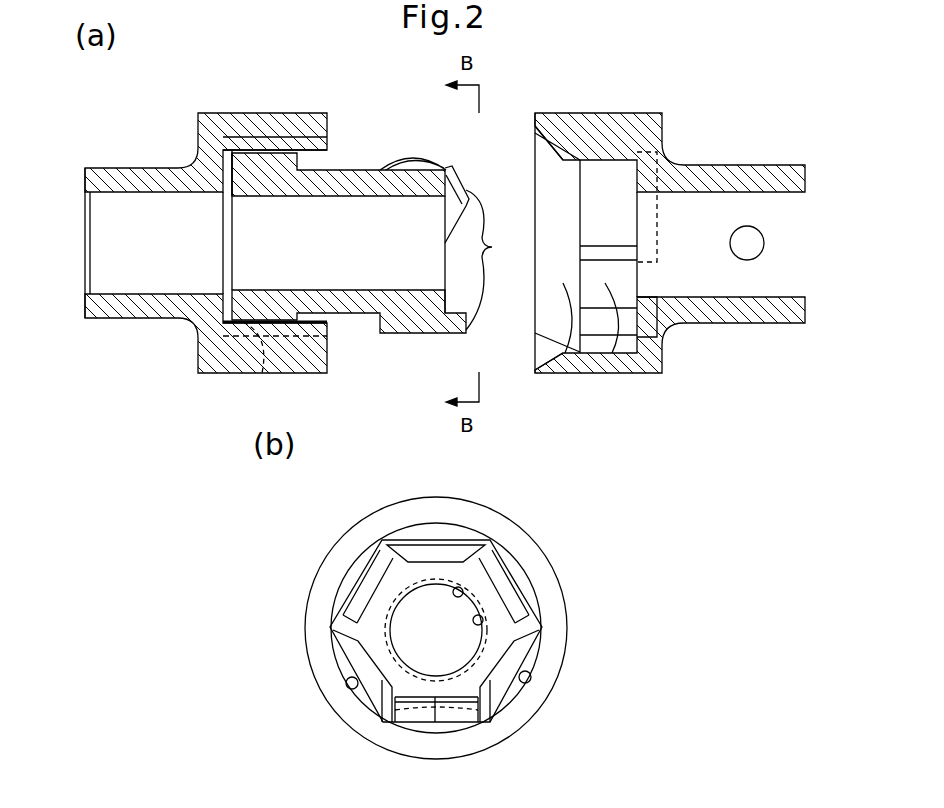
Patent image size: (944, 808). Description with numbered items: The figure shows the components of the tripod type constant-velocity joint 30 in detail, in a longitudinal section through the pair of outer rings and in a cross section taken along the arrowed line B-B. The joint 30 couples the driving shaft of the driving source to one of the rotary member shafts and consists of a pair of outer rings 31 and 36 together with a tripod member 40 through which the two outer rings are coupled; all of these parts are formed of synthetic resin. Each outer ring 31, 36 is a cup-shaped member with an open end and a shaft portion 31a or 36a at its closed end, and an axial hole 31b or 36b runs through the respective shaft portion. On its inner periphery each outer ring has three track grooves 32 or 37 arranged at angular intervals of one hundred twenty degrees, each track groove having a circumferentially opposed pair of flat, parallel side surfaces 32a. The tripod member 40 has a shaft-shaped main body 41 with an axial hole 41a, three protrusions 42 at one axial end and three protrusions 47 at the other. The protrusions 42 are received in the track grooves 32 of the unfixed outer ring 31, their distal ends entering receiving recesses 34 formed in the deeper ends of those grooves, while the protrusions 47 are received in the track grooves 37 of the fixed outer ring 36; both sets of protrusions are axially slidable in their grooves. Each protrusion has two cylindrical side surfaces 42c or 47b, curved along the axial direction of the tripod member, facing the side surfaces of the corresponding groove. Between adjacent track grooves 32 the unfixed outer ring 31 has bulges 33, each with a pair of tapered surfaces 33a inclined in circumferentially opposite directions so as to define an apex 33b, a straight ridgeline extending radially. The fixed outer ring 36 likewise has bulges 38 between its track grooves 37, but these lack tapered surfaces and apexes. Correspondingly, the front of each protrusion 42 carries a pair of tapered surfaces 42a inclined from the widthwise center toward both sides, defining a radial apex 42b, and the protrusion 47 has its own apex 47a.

The tripod type constant-velocity joint 30 is at (644, 106).
The outer ring 31 is at (653, 132).
The shaft portion 31a is at (730, 317).
The axial hole 31b is at (790, 195).
The track groove 32 is at (600, 188).
The side surface 32a is at (617, 240).
The bulge 33 is at (608, 285).
The tapered surface 33a is at (563, 353).
The apex 33b is at (570, 280).
The receiving recess 34 is at (657, 262).
The outer ring 36 is at (207, 140).
The shaft portion 36a is at (127, 305).
The axial hole 36b is at (125, 197).
The track groove 37 is at (262, 137).
The bulge 38 is at (313, 320).
The tripod member 40 is at (262, 182).
The main body 41 is at (345, 308).
The axial hole 41a is at (478, 628).
The protrusion 42 is at (428, 322).
The tapered surface 42a is at (462, 193).
The apex 42b is at (432, 792).
The side surface 42c is at (408, 150).
The protrusion 47 is at (242, 157).
The apex 47a is at (286, 143).
The side surface 47b is at (260, 327).